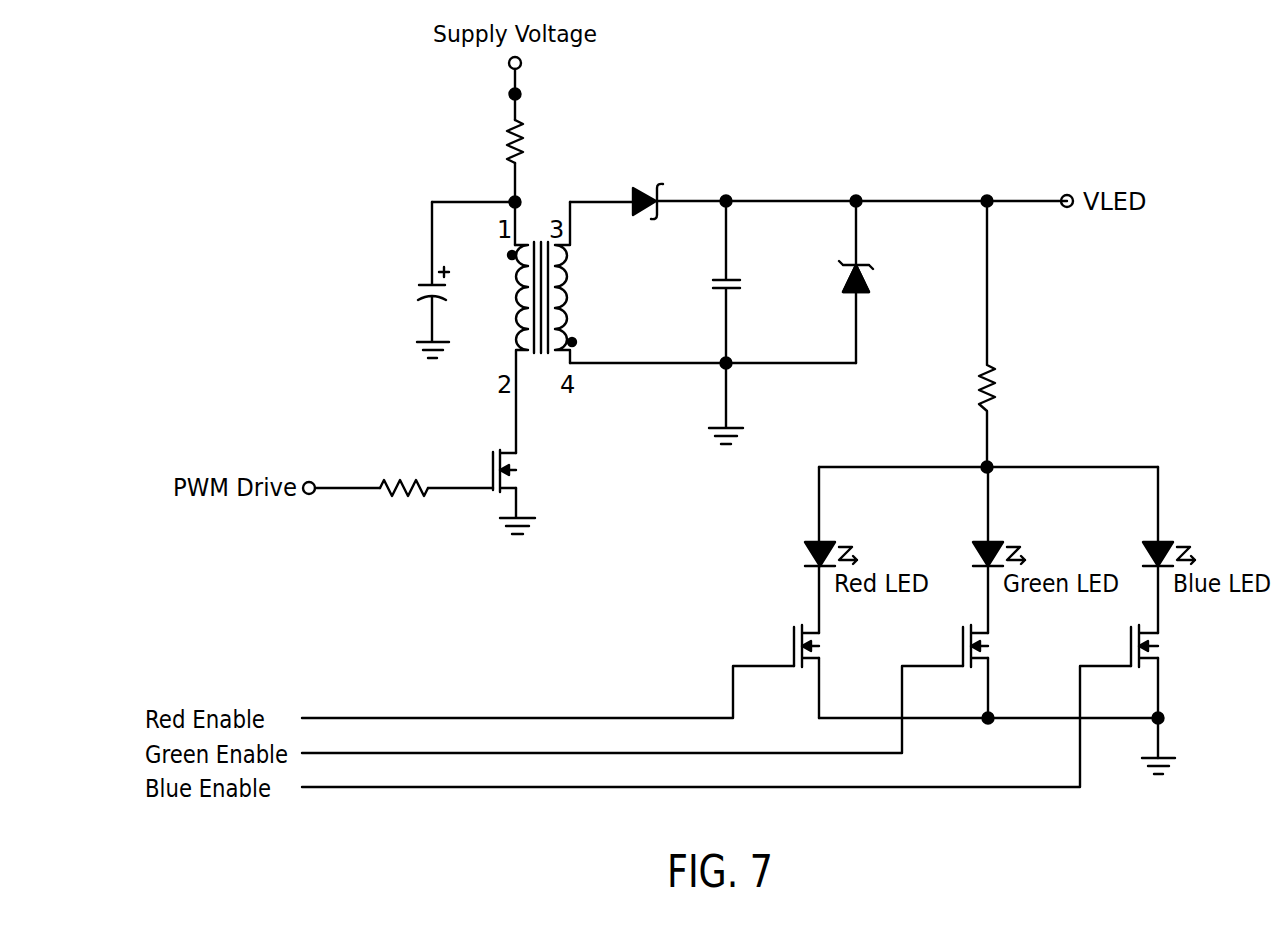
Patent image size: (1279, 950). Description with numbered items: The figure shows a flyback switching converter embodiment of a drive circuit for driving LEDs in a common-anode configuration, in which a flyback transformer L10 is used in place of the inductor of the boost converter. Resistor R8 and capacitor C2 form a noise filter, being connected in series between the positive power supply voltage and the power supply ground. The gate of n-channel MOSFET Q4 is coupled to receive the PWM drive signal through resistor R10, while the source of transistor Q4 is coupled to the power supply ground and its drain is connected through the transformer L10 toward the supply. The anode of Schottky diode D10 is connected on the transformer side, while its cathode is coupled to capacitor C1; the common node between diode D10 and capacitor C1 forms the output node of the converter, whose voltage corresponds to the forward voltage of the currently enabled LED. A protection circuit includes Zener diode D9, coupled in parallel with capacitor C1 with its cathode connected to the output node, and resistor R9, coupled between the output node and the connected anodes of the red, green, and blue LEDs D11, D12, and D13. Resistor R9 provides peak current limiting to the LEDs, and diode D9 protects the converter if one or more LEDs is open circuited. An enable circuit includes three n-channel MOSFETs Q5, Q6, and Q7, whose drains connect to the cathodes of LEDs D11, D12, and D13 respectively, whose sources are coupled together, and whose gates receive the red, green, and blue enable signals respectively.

The resistor R8 is at (523, 152).
The capacitor C2 is at (426, 284).
The flyback transformer L10 is at (575, 300).
The Schottky diode D10 is at (650, 190).
The capacitor C1 is at (742, 285).
The Zener diode D9 is at (870, 268).
The resistor R9 is at (996, 381).
The red LED D11 is at (826, 542).
The green LED D12 is at (994, 542).
The blue LED D13 is at (1164, 542).
The n-channel MOSFET Q4 is at (520, 476).
The n-channel MOSFET Q5 is at (825, 658).
The n-channel MOSFET Q6 is at (994, 658).
The n-channel MOSFET Q7 is at (1163, 658).
The resistor R10 is at (386, 484).